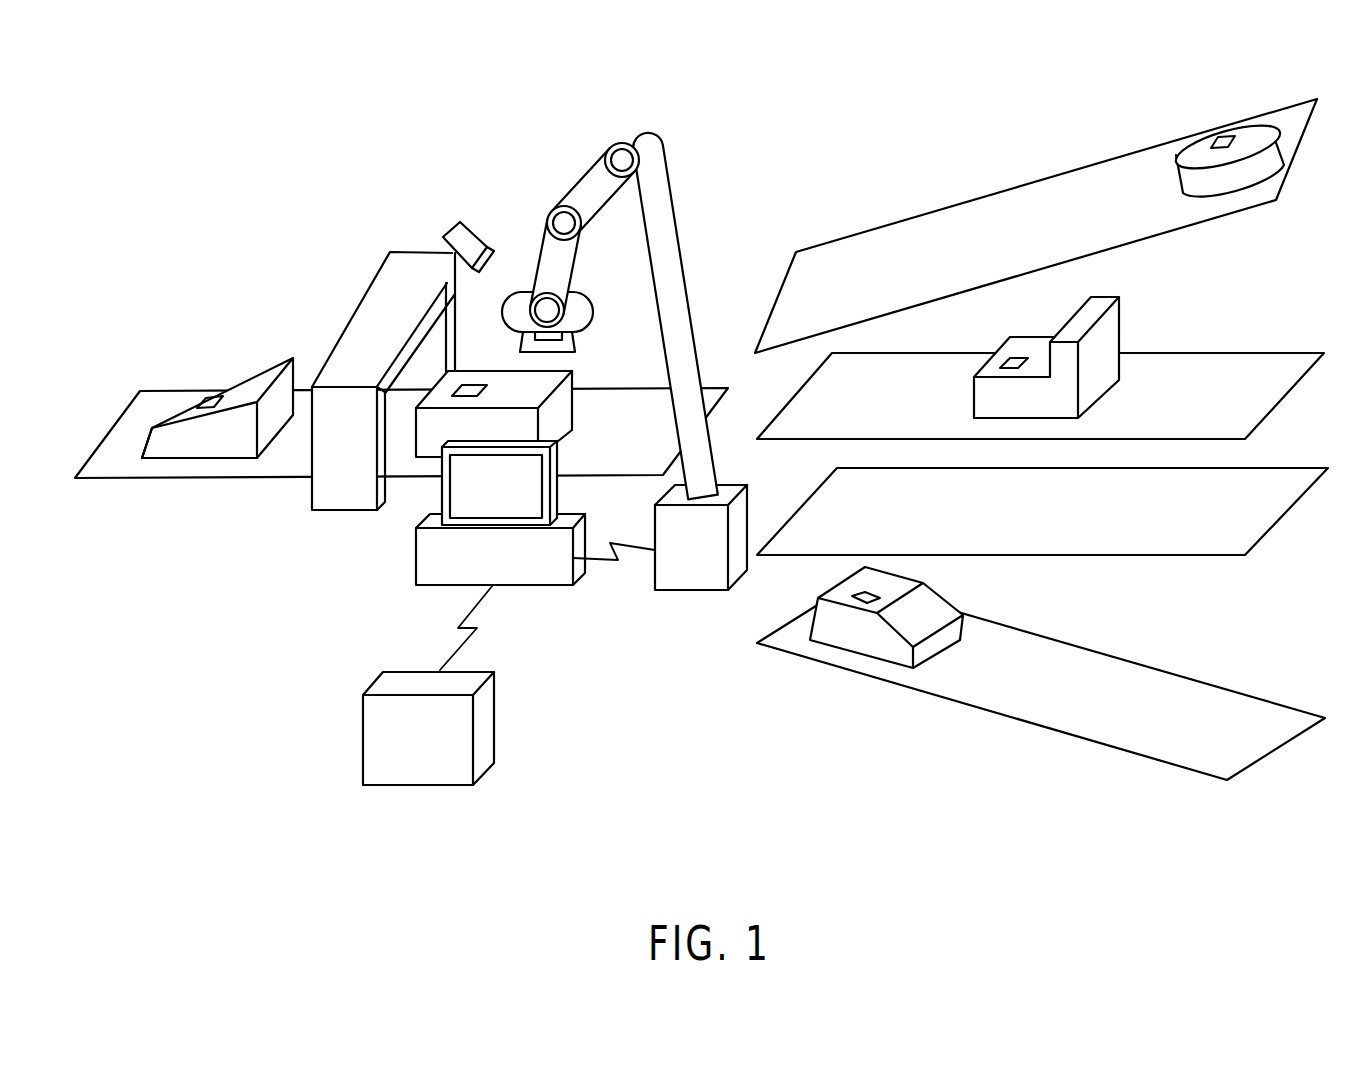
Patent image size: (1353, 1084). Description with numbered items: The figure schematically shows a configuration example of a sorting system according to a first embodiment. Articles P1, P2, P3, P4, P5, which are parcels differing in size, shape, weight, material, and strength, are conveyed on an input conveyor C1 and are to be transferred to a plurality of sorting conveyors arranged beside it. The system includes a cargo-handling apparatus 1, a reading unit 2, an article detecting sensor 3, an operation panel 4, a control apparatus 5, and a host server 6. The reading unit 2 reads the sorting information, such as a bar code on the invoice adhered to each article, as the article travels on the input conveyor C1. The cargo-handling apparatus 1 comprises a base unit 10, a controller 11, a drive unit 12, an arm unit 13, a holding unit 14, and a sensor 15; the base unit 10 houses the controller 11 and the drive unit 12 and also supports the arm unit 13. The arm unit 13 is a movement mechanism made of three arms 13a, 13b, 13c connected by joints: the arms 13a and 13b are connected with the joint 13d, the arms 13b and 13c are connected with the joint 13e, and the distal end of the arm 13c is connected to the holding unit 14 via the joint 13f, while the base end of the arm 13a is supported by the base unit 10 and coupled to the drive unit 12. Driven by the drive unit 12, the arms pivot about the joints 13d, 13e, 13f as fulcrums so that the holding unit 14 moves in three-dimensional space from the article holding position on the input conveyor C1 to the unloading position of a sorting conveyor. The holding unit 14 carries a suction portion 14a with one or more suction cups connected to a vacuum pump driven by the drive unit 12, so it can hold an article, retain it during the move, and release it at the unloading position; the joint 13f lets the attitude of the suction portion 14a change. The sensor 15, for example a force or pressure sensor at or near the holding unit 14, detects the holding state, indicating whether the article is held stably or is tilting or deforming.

The cargo-handling apparatus 1 is at (660, 108).
The reading unit 2 is at (407, 252).
The article detecting sensor 3 is at (453, 222).
The operation panel 4 is at (558, 492).
The control apparatus 5 is at (543, 578).
The host server 6 is at (485, 724).
The base unit 10 is at (698, 565).
The controller 11 is at (701, 537).
The drive unit 12 is at (690, 582).
The arm unit 13 is at (600, 295).
The arm 13a is at (640, 260).
The arm 13b is at (588, 183).
The arm 13c is at (553, 260).
The joint 13d is at (622, 157).
The joint 13e is at (562, 215).
The joint 13f is at (547, 307).
The holding unit 14 is at (553, 338).
The suction portion 14a is at (577, 350).
The sensor 15 is at (565, 335).
The article P1 is at (217, 390).
The article P2 is at (521, 413).
The article P3 is at (1228, 135).
The article P4 is at (1068, 354).
The article P5 is at (891, 616).
The input conveyor C1 is at (283, 468).